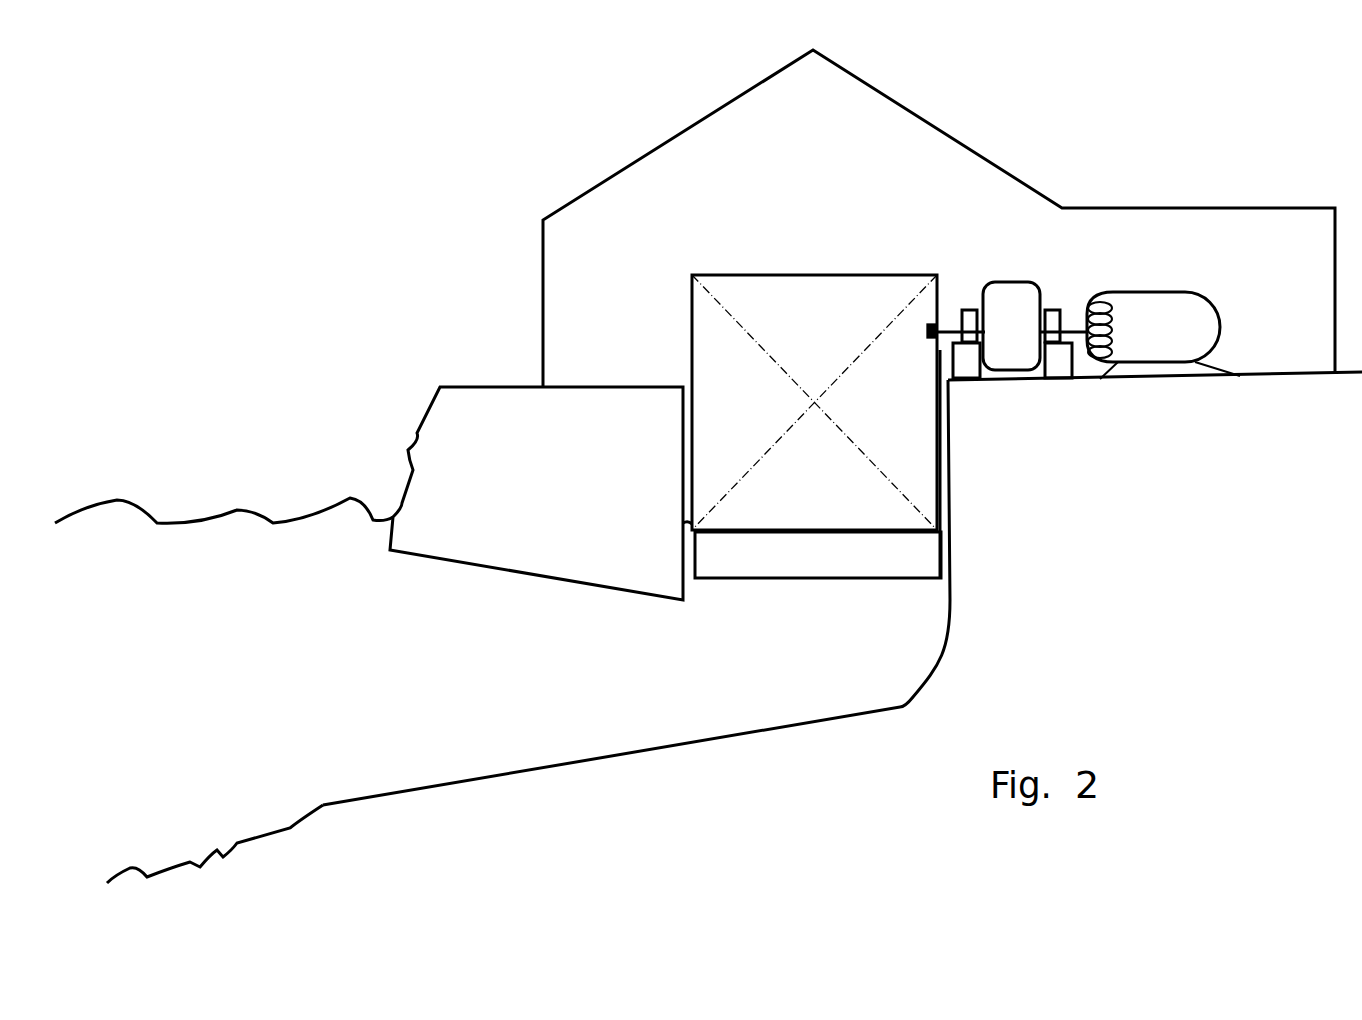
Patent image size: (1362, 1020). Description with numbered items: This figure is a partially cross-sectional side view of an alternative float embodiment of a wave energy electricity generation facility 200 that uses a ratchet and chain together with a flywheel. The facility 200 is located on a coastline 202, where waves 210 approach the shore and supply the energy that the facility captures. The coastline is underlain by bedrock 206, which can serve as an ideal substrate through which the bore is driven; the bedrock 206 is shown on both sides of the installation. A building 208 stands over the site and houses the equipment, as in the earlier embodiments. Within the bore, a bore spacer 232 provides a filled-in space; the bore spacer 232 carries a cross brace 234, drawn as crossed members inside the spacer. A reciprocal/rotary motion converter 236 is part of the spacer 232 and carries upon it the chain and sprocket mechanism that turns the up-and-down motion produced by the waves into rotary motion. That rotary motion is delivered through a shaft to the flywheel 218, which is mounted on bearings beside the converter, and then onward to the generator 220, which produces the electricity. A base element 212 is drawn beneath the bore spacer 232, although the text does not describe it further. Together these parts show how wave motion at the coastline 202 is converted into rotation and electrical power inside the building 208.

The wave energy electricity generation facility 200 is at (330, 223).
The coastline 202 is at (418, 432).
The bedrock 206 is at (556, 488).
The building 208 is at (624, 167).
The waves 210 is at (120, 507).
The turbine housing base 212 is at (878, 557).
The flywheel 218 is at (1017, 290).
The generator 220 is at (1200, 322).
The bore spacer 232 is at (893, 430).
The cross brace 234 is at (888, 320).
The reciprocal/rotary motion converter 236 is at (930, 318).